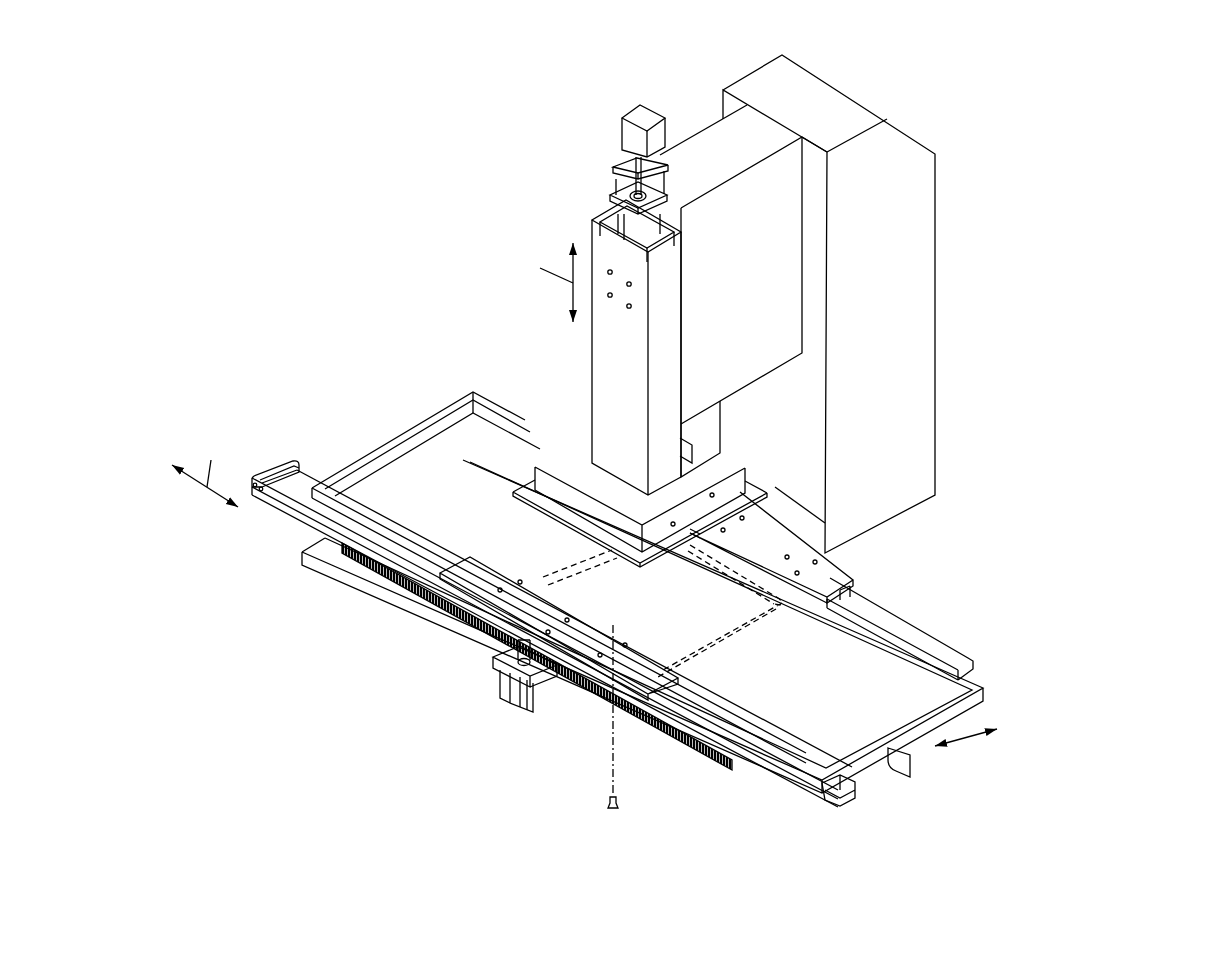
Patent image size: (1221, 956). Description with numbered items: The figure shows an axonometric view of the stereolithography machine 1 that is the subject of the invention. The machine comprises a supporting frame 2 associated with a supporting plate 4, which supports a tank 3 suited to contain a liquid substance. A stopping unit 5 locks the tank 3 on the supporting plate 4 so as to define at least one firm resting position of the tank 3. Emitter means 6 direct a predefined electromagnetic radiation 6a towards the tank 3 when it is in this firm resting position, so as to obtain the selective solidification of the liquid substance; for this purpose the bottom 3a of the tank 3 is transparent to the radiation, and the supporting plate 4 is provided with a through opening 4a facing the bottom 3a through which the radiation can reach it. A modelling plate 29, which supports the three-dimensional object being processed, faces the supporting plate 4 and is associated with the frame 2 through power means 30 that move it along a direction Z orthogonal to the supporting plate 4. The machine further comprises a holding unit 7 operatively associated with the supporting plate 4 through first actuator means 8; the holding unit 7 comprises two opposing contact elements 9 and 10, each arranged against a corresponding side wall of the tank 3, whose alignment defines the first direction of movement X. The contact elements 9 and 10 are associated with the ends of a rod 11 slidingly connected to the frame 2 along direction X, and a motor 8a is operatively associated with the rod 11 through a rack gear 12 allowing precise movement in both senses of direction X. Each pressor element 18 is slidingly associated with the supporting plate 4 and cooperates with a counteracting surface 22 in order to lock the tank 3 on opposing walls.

The stereolithography machine 1 is at (995, 180).
The supporting frame 2 is at (910, 460).
The tank 3 is at (993, 676).
The bottom 3a is at (867, 725).
The supporting plate 4 is at (732, 787).
The through opening 4a is at (715, 645).
The stopping unit 5 is at (865, 582).
The emitter means 6 is at (606, 808).
The electromagnetic radiation 6a is at (610, 765).
The holding unit 7 is at (282, 455).
The first actuator means 8 is at (500, 690).
The motor 8a is at (517, 690).
The contact element 9 is at (305, 480).
The contact element 10 is at (832, 785).
The rod 11 is at (287, 505).
The rack gear 12 is at (500, 662).
The pressor element 18 is at (440, 578).
The counteracting surface 22 is at (933, 647).
The modelling plate 29 is at (570, 467).
The power means 30 is at (595, 203).